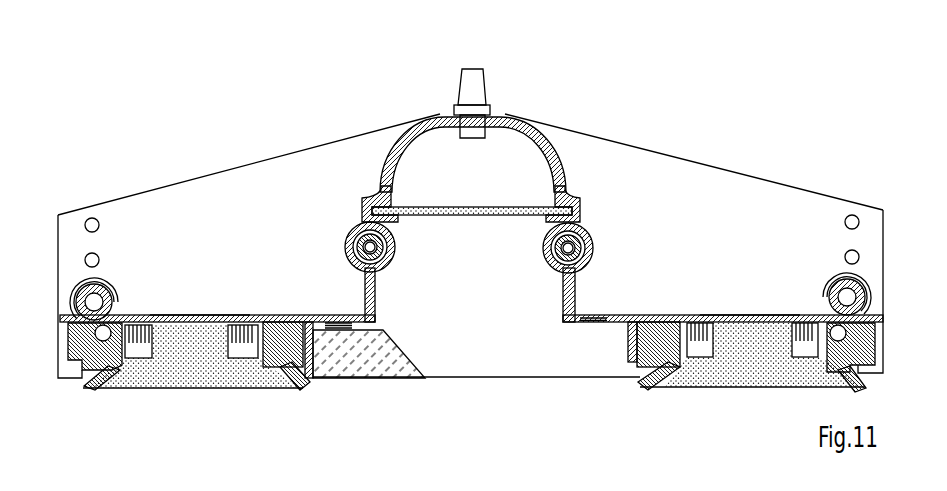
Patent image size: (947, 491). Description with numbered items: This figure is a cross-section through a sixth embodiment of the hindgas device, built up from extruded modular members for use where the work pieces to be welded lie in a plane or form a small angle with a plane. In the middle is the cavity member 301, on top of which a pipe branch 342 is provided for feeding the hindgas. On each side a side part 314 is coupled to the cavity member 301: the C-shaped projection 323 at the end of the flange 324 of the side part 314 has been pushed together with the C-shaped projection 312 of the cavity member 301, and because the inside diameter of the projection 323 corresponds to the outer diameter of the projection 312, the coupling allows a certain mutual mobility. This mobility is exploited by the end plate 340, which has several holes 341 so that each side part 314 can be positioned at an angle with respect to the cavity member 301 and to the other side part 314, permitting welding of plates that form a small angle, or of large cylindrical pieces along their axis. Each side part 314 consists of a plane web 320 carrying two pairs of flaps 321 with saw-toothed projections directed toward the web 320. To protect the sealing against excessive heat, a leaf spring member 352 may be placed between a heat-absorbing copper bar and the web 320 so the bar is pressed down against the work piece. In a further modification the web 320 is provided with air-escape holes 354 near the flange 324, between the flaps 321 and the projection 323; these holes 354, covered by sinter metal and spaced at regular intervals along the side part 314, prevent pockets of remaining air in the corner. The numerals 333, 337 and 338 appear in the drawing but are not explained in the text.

The cavity member 301 is at (556, 138).
The C-shaped projection 312 is at (362, 230).
The side part 314 is at (199, 313).
The web 320 is at (304, 315).
The flaps 321 is at (632, 358).
The C-shaped projection 323 is at (345, 249).
The flange 324 is at (376, 290).
The filter strip 333 is at (503, 214).
The spring elements 337 is at (230, 350).
The floor line 338 is at (500, 378).
The end plate 340 is at (337, 181).
The holes 341 is at (99, 254).
The pipe branch 342 is at (486, 92).
The leaf spring member 352 is at (352, 326).
The air-escape holes 354 is at (590, 325).